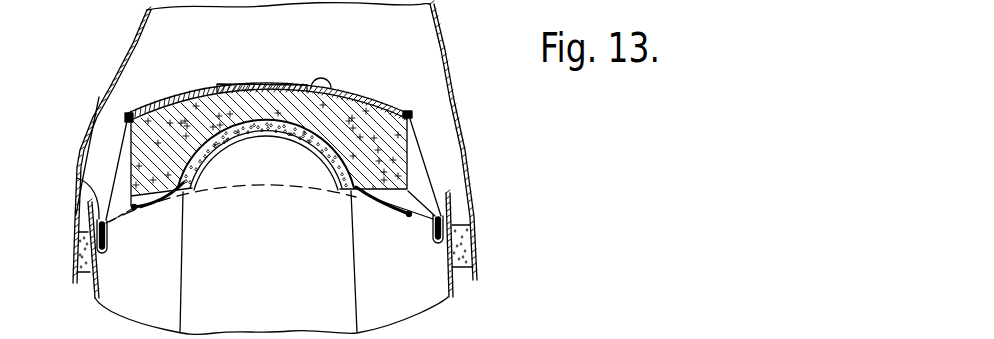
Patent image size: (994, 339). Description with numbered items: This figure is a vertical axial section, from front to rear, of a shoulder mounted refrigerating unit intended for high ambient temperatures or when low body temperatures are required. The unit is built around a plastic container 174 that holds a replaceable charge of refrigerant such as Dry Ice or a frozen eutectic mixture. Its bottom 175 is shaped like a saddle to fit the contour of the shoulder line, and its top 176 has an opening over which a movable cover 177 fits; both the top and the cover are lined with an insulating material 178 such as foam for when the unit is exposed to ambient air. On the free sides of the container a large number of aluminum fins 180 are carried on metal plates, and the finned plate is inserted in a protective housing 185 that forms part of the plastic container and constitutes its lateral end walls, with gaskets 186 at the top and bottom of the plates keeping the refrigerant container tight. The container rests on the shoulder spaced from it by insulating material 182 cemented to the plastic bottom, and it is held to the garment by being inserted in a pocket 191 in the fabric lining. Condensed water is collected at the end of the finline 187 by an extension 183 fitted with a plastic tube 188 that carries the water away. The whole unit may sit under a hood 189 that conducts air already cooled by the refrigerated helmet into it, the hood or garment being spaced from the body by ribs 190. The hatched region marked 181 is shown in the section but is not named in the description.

The container 174 is at (338, 108).
The bottom 175 is at (216, 129).
The top 176 is at (197, 92).
The movable cover 177 is at (257, 82).
The insulating material 178 is at (296, 117).
The fins 180 is at (117, 168).
The insulation 181 is at (181, 167).
The insulating material 182 is at (337, 150).
The extension 183 is at (93, 268).
The protective housing 185 is at (127, 116).
The gaskets 186 is at (160, 224).
The finline 187 is at (76, 178).
The plastic tube 188 is at (107, 248).
The hood 189 is at (135, 24).
The ribs 190 is at (473, 240).
The pocket 191 is at (403, 303).